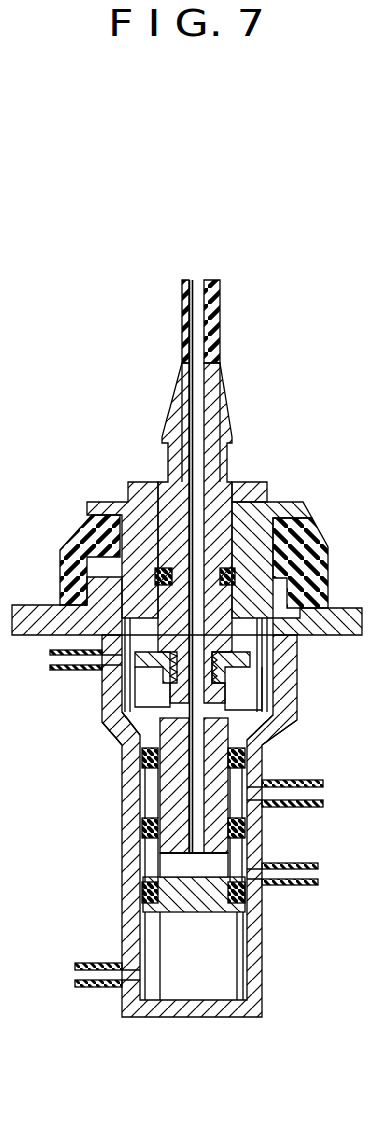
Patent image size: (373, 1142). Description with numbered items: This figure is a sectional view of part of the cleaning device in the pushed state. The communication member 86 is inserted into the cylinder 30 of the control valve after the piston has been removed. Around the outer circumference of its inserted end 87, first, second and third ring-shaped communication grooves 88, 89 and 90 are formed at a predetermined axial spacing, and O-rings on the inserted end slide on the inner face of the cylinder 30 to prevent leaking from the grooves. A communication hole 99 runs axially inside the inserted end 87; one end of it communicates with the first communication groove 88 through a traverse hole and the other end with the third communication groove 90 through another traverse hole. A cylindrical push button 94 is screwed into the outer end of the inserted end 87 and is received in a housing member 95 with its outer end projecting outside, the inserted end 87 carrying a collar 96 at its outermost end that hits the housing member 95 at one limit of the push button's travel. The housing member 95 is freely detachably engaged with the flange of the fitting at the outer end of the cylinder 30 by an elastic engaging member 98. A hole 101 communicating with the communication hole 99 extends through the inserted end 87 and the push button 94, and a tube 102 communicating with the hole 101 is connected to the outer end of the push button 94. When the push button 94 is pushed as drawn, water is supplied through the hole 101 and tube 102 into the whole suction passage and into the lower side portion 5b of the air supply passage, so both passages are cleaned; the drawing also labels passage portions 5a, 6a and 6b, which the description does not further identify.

The cylinder 30 is at (258, 965).
The third communication groove 90 is at (120, 748).
The elastic engaging member 98 is at (328, 577).
The housing member 95 is at (268, 514).
The push button 94 is at (245, 483).
The hole 101 is at (186, 505).
The tube 102 is at (220, 292).
The communication hole 99 is at (202, 727).
The communication member 86 is at (170, 690).
The collar 96 is at (250, 667).
The second communication groove 89 is at (152, 802).
The inserted end 87 is at (223, 790).
The first communication groove 88 is at (152, 863).
The lower side portion of the air supply passage 5b is at (63, 663).
The conduit 5a is at (310, 795).
The conduit 6a is at (308, 878).
The conduit 6b is at (90, 978).